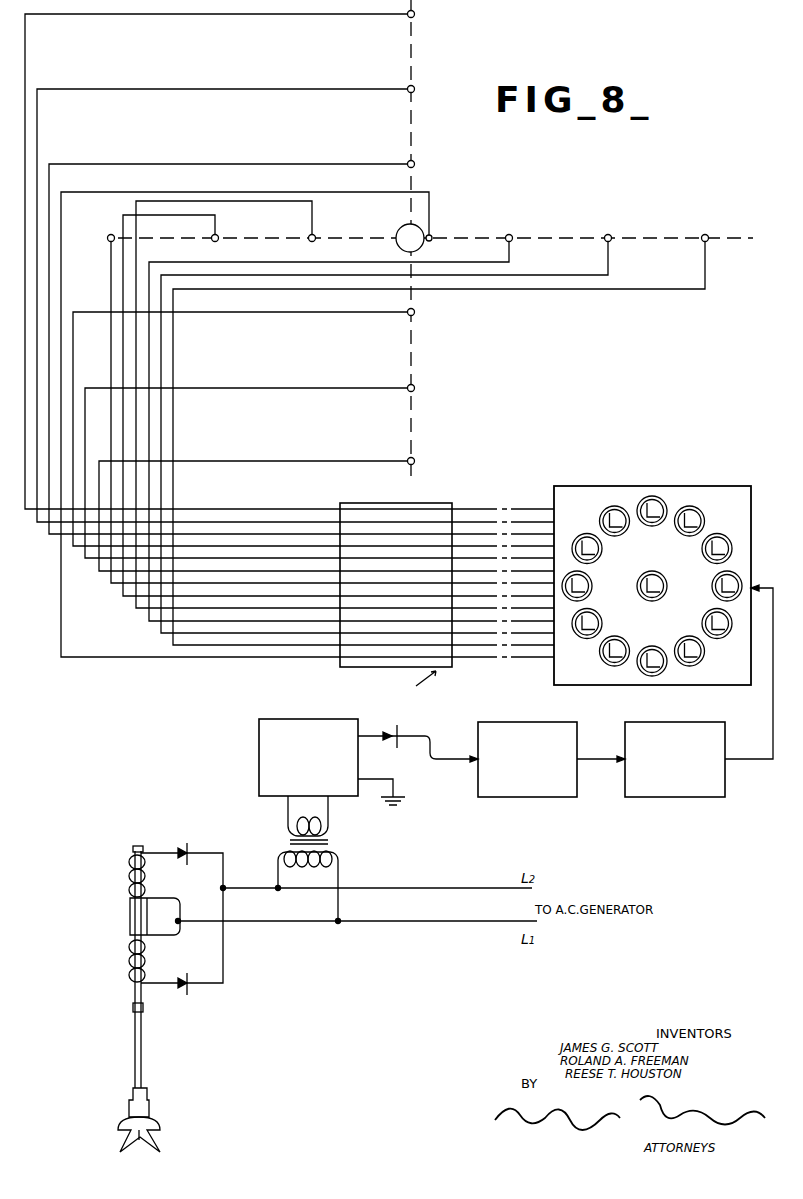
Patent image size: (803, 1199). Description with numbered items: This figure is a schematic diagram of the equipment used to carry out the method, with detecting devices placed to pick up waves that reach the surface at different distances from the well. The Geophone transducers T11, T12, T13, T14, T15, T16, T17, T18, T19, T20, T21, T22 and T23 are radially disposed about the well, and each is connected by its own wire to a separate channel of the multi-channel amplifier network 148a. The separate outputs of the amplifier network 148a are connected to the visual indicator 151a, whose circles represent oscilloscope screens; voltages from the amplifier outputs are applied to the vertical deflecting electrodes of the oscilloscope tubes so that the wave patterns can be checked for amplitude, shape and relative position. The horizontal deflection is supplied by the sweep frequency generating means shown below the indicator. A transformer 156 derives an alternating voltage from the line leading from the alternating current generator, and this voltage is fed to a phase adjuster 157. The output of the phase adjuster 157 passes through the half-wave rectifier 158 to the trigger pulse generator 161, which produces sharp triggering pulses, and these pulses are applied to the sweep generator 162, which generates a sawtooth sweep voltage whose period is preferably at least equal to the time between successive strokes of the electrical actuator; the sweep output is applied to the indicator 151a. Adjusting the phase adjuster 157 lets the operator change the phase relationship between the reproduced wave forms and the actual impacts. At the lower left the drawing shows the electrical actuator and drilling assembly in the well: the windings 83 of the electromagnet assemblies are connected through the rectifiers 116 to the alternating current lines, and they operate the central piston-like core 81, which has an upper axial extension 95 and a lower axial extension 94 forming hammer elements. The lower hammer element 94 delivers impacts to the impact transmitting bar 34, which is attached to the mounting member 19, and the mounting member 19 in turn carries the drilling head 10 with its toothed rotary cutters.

The amplifier network 148a is at (447, 503).
The visual indicator 151a is at (688, 486).
The phase adjuster 157 is at (259, 760).
The half-wave rectifier 158 is at (403, 731).
The trigger pulse generator 161 is at (515, 798).
The sweep generator 162 is at (665, 798).
The transformer 156 is at (338, 842).
The rectifiers 116 is at (186, 842).
The upper axial extension 95 is at (132, 849).
The windings 83 is at (128, 878).
The central piston-like core 81 is at (130, 919).
The lower axial extension 94 is at (135, 989).
The impact transmitting bar 34 is at (141, 1066).
The mounting member 19 is at (150, 1108).
The drilling head 10 is at (162, 1136).
The Geophone transducer T11 is at (424, 25).
The Geophone transducer T12 is at (424, 100).
The Geophone transducer T13 is at (425, 173).
The Geophone transducer T14 is at (424, 322).
The Geophone transducer T15 is at (425, 395).
The Geophone transducer T16 is at (425, 453).
The Geophone transducer T17 is at (97, 232).
The Geophone transducer T18 is at (228, 231).
The Geophone transducer T19 is at (325, 231).
The Geophone transducer T20 is at (522, 231).
The Geophone transducer T21 is at (620, 230).
The Geophone transducer T22 is at (718, 230).
The Geophone transducer T23 is at (443, 229).